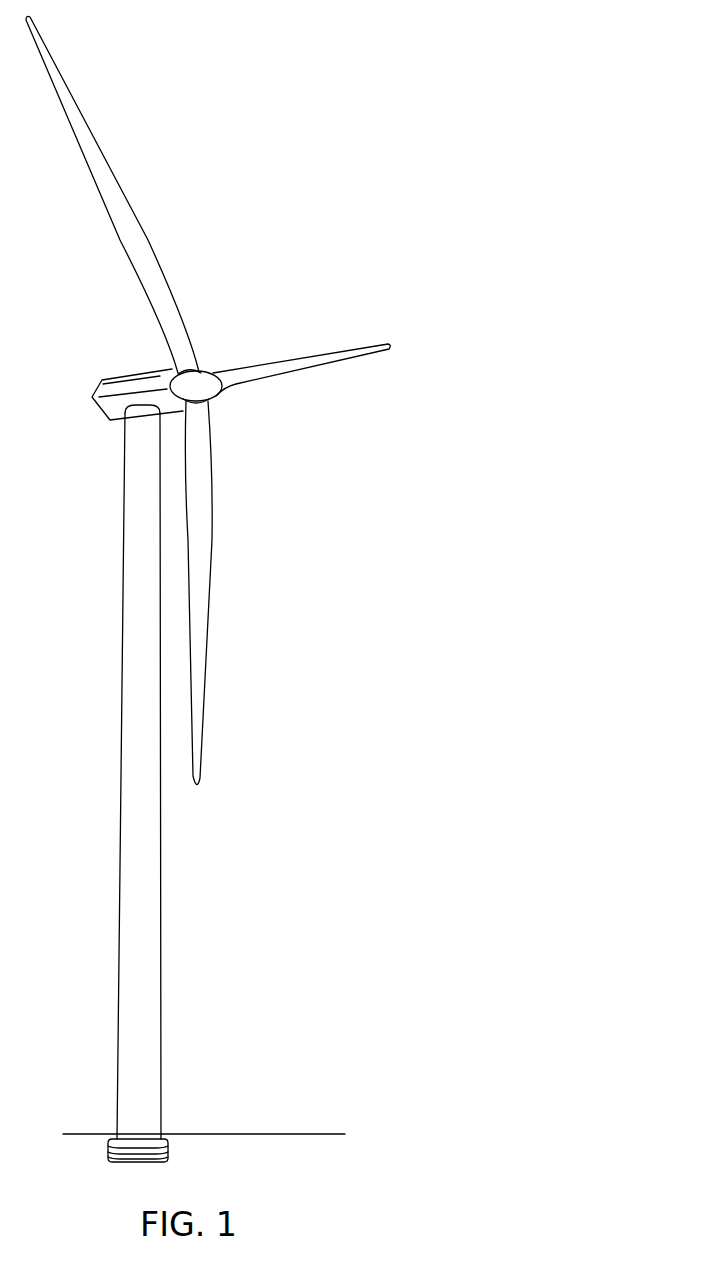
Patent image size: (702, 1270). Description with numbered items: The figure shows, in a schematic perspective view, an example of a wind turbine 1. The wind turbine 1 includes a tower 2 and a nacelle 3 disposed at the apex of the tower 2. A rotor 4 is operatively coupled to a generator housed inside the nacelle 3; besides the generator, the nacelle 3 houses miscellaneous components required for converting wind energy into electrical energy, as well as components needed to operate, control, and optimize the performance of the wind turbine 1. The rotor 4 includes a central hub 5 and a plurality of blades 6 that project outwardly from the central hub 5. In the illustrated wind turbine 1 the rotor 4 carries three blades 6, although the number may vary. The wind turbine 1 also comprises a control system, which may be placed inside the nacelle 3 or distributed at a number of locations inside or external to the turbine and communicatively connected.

The wind turbine 1 is at (346, 206).
The tower 2 is at (137, 618).
The nacelle 3 is at (97, 383).
The rotor 4 is at (234, 406).
The central hub 5 is at (212, 382).
The blades 6 is at (108, 194).